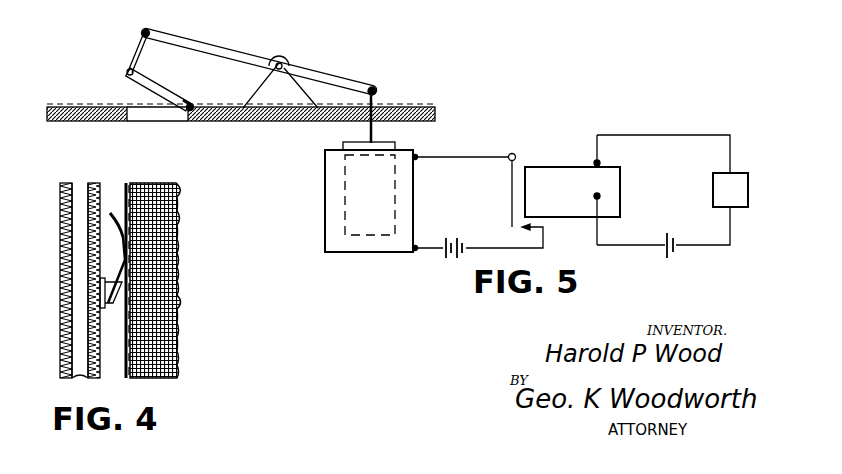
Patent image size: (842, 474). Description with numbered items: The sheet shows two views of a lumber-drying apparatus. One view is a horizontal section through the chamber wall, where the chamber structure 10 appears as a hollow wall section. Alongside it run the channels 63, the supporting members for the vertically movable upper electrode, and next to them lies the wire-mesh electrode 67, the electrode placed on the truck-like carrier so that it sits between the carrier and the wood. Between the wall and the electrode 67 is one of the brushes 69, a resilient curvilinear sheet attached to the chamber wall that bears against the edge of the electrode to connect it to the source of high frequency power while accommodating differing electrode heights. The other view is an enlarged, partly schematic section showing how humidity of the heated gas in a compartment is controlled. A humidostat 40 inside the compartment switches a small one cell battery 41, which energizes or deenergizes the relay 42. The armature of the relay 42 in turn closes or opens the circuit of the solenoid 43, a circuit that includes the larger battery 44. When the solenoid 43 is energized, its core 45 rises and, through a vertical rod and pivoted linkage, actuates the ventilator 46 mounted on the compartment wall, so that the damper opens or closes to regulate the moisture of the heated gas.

In FIG. 4, the wall panel 10 is at (62, 257).
In FIG. 4, the channels 63 is at (125, 185).
In FIG. 4, the electrode 67 is at (158, 196).
In FIG. 4, the brushes 69 is at (122, 262).
In FIG. 5, the ventilator 46 is at (152, 92).
In FIG. 5, the core 45 is at (396, 146).
In FIG. 5, the solenoid 43 is at (370, 250).
In FIG. 5, the battery 44 is at (448, 257).
In FIG. 5, the relay 42 is at (535, 173).
In FIG. 5, the humidostat 40 is at (735, 182).
In FIG. 5, the one cell battery 41 is at (678, 220).